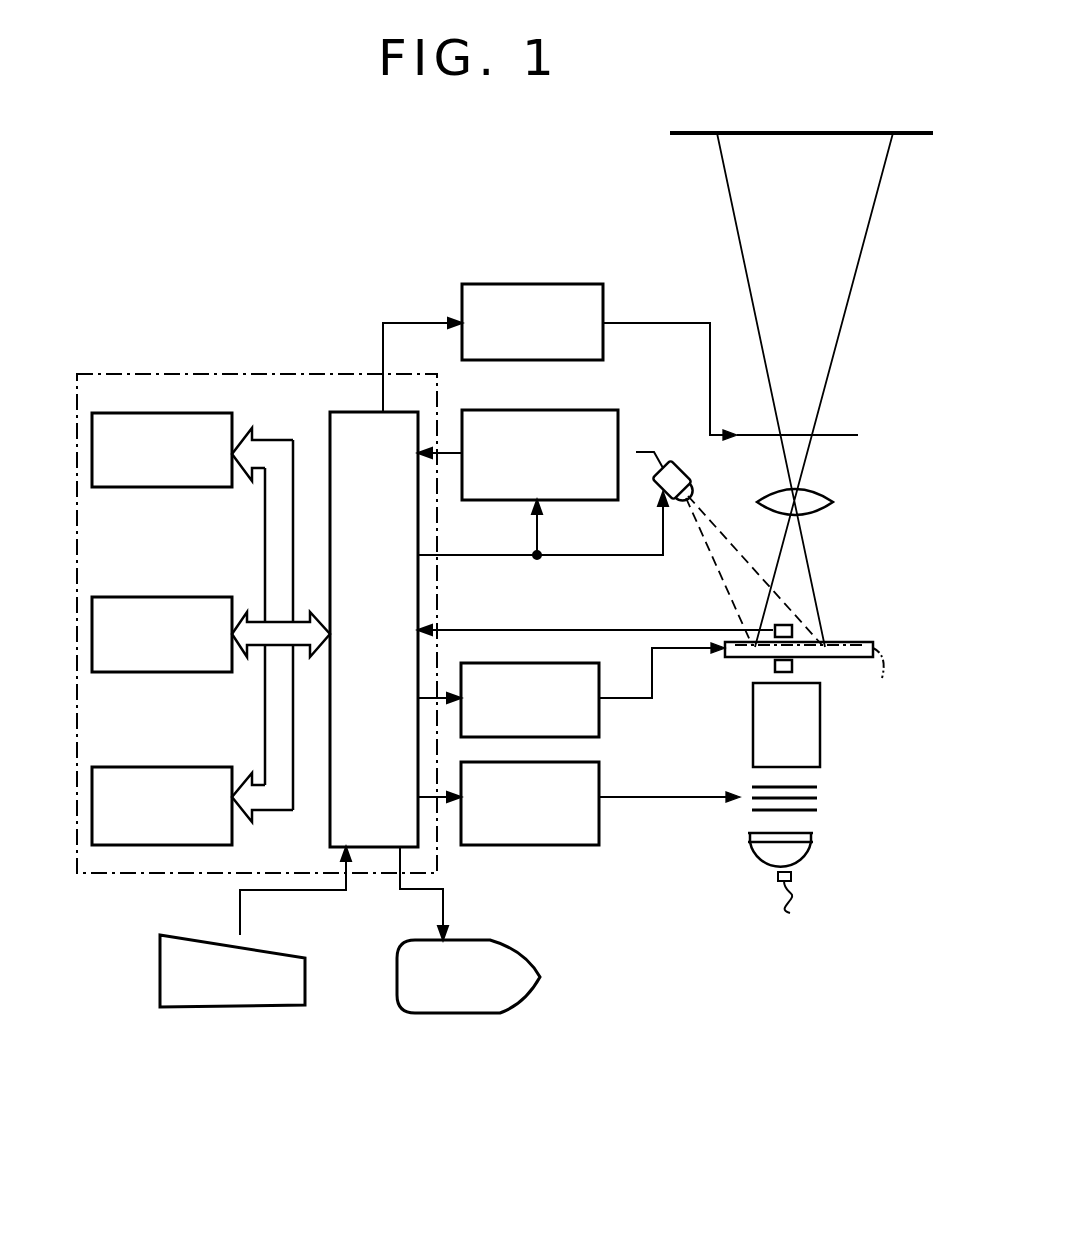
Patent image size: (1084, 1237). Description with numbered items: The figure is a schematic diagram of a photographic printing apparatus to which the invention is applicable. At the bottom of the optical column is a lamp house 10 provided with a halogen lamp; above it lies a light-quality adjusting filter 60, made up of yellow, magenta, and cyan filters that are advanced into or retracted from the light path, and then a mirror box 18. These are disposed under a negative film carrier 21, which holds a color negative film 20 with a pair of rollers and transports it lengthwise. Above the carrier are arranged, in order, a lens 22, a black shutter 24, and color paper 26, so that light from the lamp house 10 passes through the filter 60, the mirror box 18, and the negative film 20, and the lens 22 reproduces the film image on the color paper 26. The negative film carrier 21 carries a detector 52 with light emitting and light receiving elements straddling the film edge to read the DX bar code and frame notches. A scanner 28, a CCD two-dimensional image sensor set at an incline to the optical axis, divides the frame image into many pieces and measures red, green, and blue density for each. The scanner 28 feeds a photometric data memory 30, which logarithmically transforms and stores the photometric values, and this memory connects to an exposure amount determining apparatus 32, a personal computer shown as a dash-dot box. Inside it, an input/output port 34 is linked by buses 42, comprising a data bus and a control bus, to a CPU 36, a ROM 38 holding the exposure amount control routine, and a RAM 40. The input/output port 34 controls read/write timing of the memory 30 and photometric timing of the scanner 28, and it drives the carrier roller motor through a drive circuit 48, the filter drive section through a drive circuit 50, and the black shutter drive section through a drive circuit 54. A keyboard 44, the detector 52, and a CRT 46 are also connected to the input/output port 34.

The lamp house 10 is at (813, 853).
The mirror box 18 is at (820, 745).
The color negative film 20 is at (850, 642).
The negative film carrier 21 is at (878, 677).
The lens 22 is at (833, 500).
The black shutter 24 is at (823, 437).
The color paper 26 is at (915, 135).
The scanner 28 is at (690, 470).
The photometric data memory 30 is at (545, 410).
The exposure amount determining apparatus 32 is at (270, 373).
The input/output port 34 is at (372, 412).
The CPU 36 is at (157, 413).
The ROM 38 is at (172, 597).
The RAM 40 is at (160, 767).
The buses 42 is at (265, 745).
The keyboard 44 is at (240, 1007).
The CRT 46 is at (455, 1013).
The drive circuit 48 is at (599, 710).
The drive circuit 50 is at (599, 830).
The detector 52 is at (783, 625).
The drive circuit 54 is at (517, 284).
The light-quality adjusting filter 60 is at (817, 807).